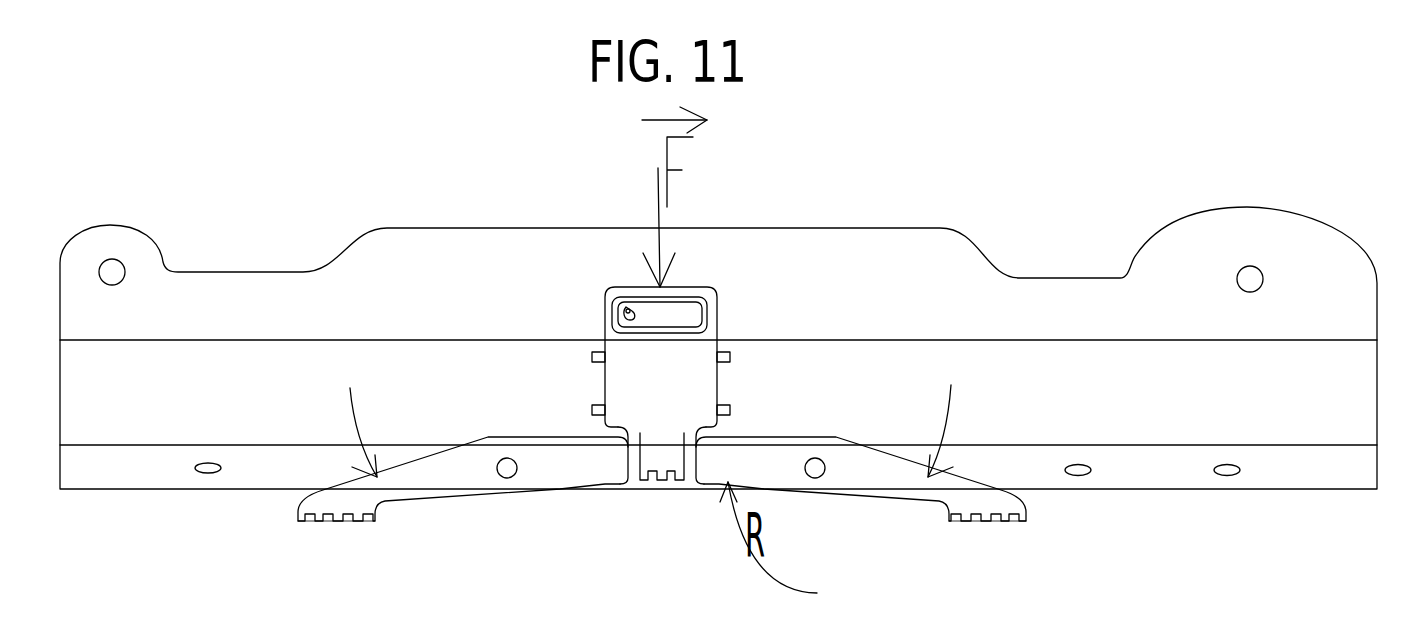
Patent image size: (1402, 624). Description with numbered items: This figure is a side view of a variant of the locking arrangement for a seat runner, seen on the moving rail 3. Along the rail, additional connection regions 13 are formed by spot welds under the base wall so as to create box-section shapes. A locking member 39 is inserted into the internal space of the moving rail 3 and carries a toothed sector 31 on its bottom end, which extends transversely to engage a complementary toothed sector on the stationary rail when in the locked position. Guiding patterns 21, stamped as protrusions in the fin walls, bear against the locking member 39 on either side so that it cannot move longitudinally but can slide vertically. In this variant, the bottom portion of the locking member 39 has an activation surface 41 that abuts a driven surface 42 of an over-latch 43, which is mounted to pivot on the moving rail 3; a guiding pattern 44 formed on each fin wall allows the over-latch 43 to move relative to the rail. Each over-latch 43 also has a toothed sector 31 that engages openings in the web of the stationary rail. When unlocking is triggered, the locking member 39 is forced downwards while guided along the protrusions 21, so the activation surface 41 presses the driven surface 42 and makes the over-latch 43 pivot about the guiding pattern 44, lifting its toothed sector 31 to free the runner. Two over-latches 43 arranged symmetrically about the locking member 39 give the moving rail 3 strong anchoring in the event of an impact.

The moving rail 3 is at (230, 122).
The additional connection regions 13 is at (1224, 472).
The guiding patterns 21 is at (592, 410).
The toothed sector 31 is at (335, 522).
The locking member 39 is at (687, 370).
The activation surface 41 is at (737, 427).
The driven surface 42 is at (697, 480).
The over-latch 43 is at (382, 495).
The guiding pattern 44 is at (507, 468).